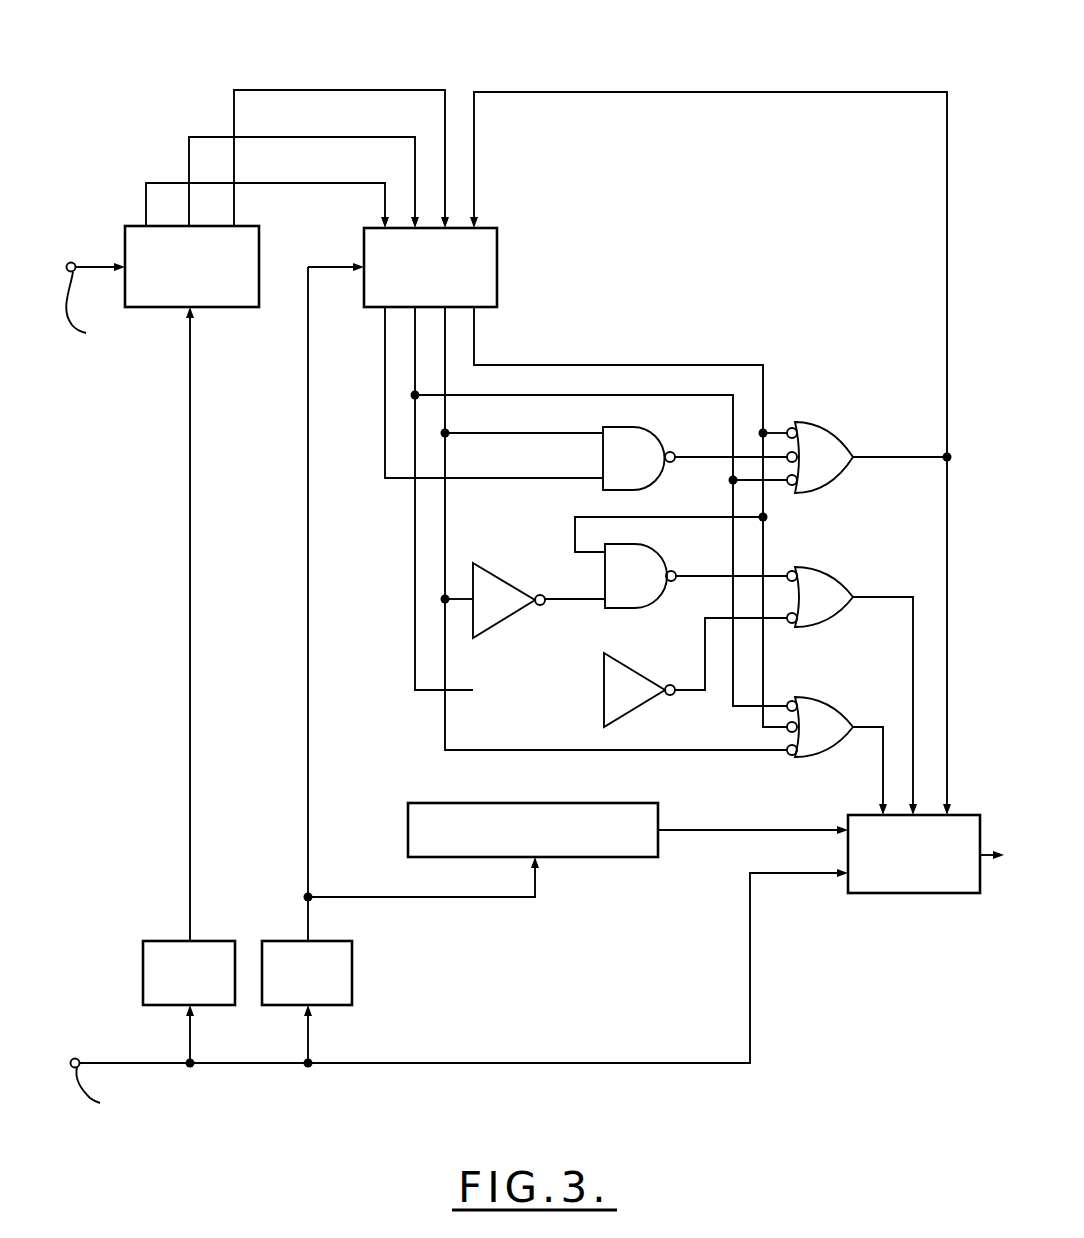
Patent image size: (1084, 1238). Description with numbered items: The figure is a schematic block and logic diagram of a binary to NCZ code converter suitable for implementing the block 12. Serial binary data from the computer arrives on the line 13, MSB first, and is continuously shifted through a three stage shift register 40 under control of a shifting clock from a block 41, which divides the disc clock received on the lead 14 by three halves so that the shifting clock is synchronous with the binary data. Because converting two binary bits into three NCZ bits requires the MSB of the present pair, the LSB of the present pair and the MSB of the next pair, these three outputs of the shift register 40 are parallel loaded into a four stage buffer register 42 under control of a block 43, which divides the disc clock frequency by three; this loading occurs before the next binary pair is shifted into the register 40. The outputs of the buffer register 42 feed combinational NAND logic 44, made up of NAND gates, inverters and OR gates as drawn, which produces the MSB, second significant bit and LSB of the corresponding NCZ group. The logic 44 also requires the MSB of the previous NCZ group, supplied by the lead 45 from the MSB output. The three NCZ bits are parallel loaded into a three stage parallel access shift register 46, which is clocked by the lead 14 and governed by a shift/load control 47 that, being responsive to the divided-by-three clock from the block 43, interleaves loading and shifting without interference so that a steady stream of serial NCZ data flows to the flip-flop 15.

The binary to NCZ code converter 12 is at (148, 564).
The line 13 is at (92, 263).
The lead 14 is at (124, 1062).
The flip-flop 15 is at (986, 860).
The three stage shift register 40 is at (260, 264).
The block 41 is at (143, 980).
The four stage buffer register 42 is at (498, 264).
The block 43 is at (352, 962).
The combinational NAND logic 44 is at (520, 534).
The lead 45 is at (730, 91).
The three stage parallel access shift register 46 is at (847, 819).
The shift/load control 47 is at (407, 829).